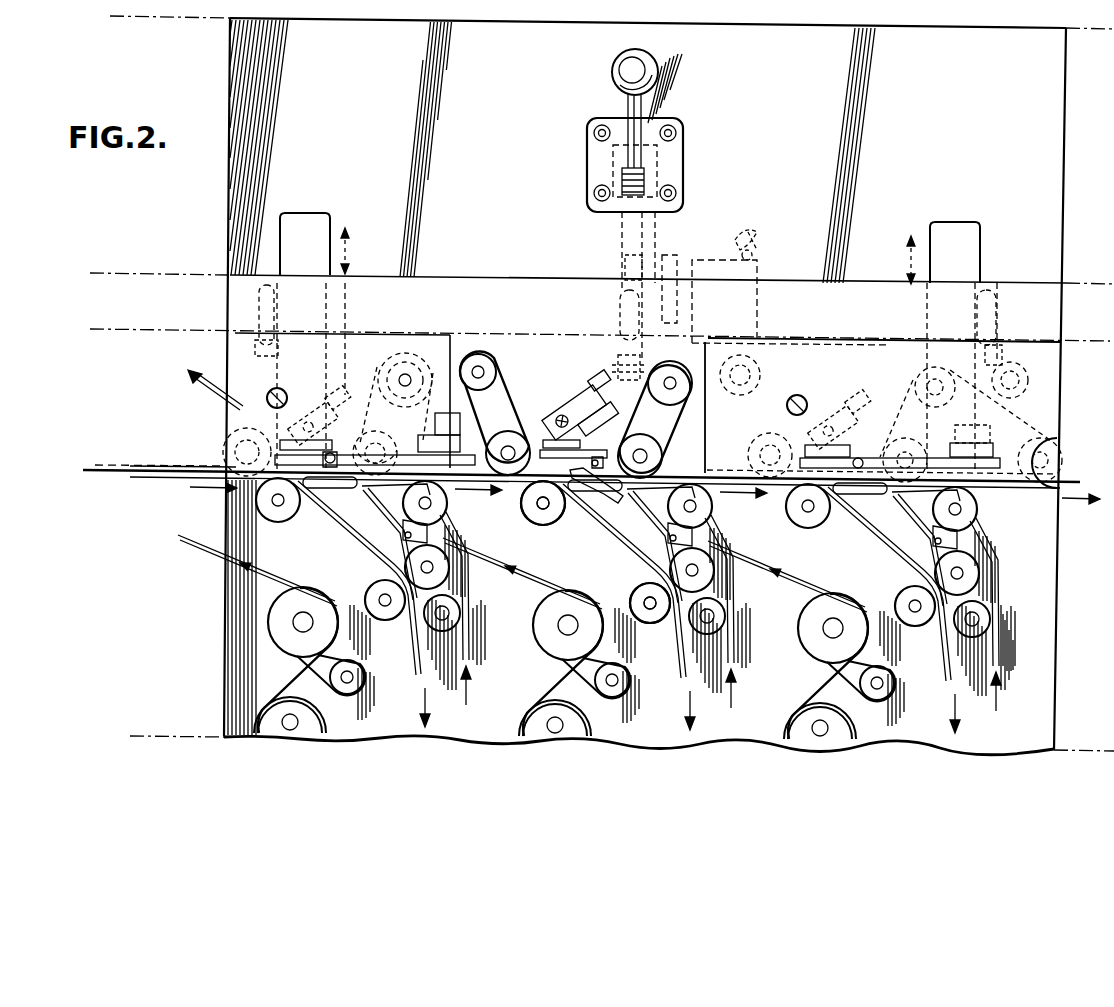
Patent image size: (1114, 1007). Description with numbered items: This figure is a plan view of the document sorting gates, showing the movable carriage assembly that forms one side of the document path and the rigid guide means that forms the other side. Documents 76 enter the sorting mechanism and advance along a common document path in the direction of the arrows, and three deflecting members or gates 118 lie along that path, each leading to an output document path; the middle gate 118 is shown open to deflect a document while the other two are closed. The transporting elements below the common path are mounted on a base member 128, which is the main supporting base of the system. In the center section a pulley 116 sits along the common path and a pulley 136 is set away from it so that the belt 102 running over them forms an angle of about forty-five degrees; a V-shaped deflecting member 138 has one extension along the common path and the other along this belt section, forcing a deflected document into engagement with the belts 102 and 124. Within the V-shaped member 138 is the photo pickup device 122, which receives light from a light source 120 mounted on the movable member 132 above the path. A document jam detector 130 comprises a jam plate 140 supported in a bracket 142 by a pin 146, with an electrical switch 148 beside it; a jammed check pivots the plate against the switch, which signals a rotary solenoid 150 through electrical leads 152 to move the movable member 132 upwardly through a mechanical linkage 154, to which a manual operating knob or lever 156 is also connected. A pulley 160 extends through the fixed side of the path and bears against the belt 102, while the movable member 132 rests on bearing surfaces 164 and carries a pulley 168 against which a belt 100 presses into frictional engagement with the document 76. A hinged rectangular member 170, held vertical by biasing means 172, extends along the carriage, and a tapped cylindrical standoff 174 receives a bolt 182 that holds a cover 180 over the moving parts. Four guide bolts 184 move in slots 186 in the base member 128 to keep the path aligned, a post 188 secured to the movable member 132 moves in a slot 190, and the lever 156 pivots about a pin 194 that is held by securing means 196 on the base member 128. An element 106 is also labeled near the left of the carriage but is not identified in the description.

The documents 76 is at (100, 478).
The belt 100 is at (210, 400).
The belt 102 is at (288, 584).
The guide roller 106 is at (230, 442).
The pulley 116 is at (279, 522).
The deflecting member or gate 118 is at (328, 502).
The light source 120 is at (378, 405).
The photo pickup device 122 is at (380, 502).
The belt 124 is at (470, 650).
The base member 128 is at (245, 82).
The document jam detector 130 is at (252, 482).
The movable member 132 is at (440, 283).
The pulley 136 is at (658, 624).
The V-shaped deflecting member 138 is at (380, 562).
The jam plate 140 is at (530, 515).
The bracket 142 is at (612, 428).
The pin 146 is at (610, 500).
The electrical switch 148 is at (492, 428).
The rotary solenoid 150 is at (766, 292).
The electrical output leads 152 is at (752, 235).
The mechanical linkage 154 is at (668, 262).
The mechanical operating knob 156 is at (613, 77).
The pulley 160 is at (433, 518).
The bearing surface 164 is at (301, 215).
The pulley 168 is at (655, 447).
The hinged rectangular member 170 is at (405, 440).
The biasing means 172 is at (458, 445).
The tapped cylindrical standoff 174 is at (296, 388).
The cover 180 is at (395, 345).
The bolt 182 is at (810, 397).
The guide bolts 184 is at (258, 348).
The slots 186 is at (258, 295).
The post 188 is at (614, 372).
The slot 190 is at (612, 323).
The pin 194 is at (615, 170).
The securing means 196 is at (589, 148).